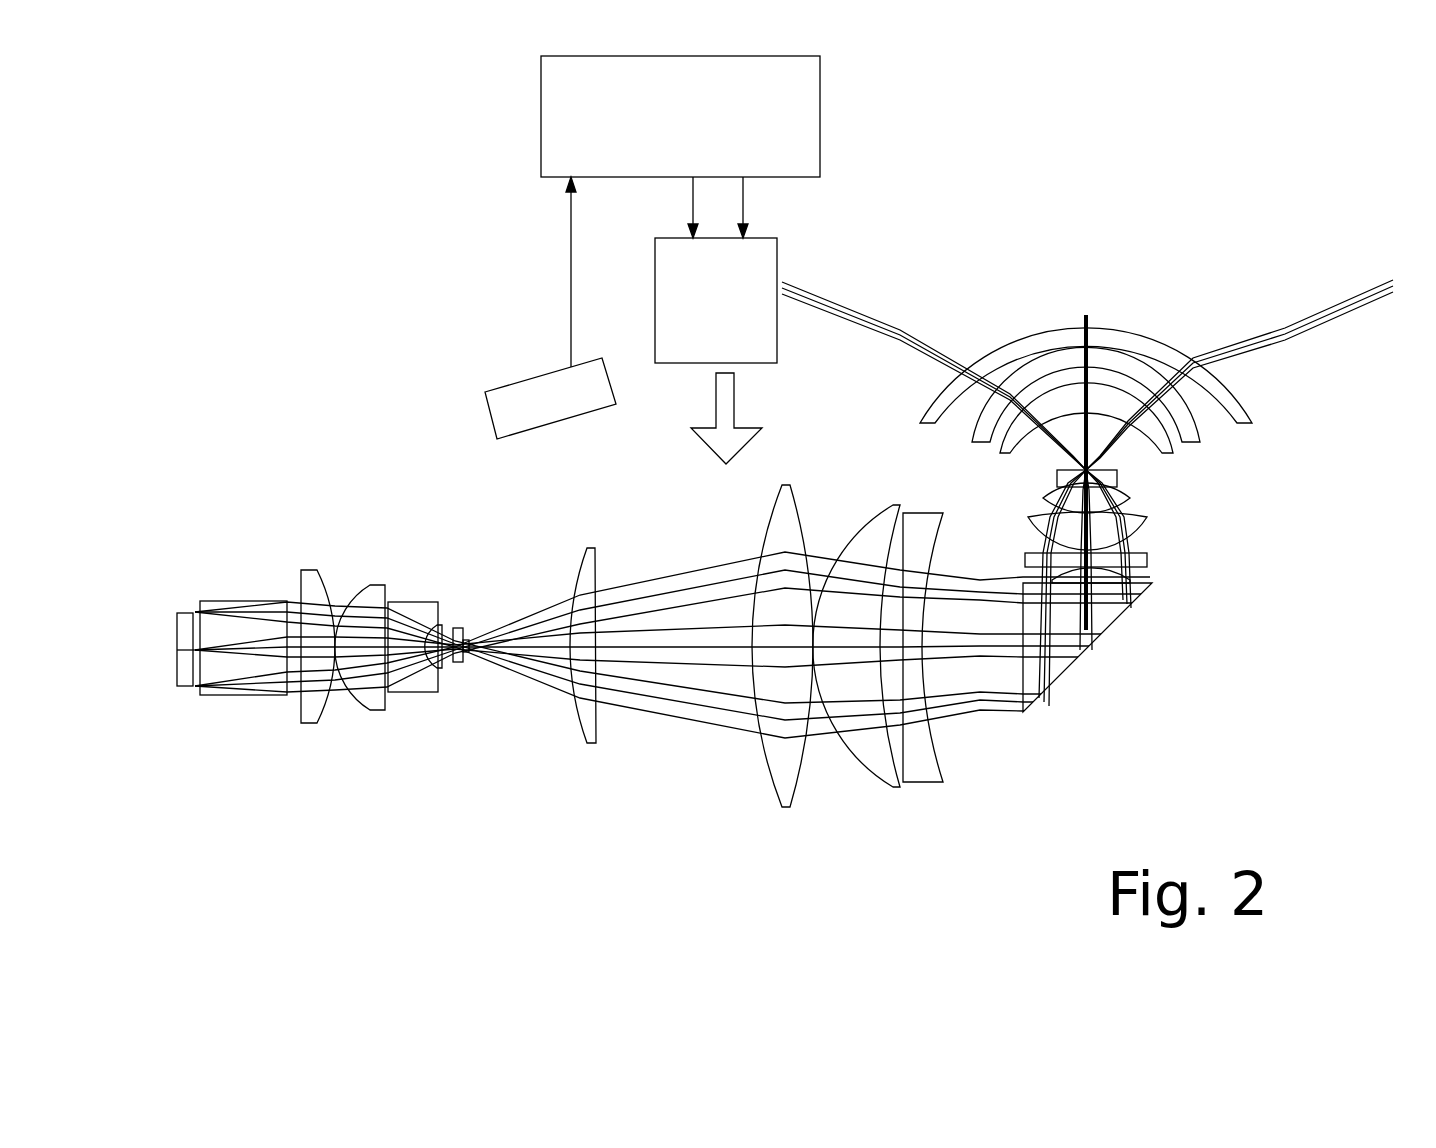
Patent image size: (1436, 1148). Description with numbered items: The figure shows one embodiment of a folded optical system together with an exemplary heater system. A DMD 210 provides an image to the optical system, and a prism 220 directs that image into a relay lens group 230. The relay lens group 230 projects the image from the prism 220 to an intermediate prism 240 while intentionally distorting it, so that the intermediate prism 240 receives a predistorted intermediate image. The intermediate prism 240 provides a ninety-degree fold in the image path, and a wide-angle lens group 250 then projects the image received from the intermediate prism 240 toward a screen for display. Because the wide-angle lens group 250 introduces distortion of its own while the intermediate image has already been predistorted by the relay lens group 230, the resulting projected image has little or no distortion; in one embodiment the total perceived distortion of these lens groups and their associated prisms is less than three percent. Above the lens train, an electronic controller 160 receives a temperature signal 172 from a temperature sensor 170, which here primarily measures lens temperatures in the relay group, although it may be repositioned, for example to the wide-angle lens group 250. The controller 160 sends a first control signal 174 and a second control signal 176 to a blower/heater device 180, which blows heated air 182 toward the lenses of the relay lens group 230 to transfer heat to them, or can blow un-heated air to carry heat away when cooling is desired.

The electronic controller 160 is at (680, 116).
The temperature sensor 170 is at (547, 372).
The temperature signal 172 is at (571, 298).
The first control signal 174 is at (690, 212).
The second control signal 176 is at (744, 196).
The blower/heater device 180 is at (778, 278).
The heated air 182 is at (742, 397).
The DMD 210 is at (183, 612).
The prism 220 is at (253, 702).
The relay lens group 230 is at (282, 788).
The intermediate prism 240 is at (1117, 618).
The wide-angle lens group 250 is at (1250, 574).